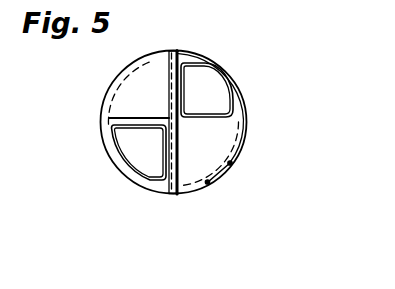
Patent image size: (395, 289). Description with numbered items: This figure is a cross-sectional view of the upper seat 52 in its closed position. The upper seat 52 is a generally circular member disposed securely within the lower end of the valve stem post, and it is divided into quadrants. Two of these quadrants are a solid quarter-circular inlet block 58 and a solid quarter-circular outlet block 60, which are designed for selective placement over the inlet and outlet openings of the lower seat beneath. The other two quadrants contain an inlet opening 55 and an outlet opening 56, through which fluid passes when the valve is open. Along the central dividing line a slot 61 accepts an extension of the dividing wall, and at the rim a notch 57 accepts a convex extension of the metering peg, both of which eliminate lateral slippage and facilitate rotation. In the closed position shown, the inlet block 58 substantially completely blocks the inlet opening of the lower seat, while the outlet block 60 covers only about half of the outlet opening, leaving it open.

The upper seat 52 is at (105, 98).
The inlet opening 55 is at (156, 154).
The outlet opening 56 is at (215, 106).
The notch 57 is at (208, 183).
The inlet block 58 is at (157, 104).
The outlet block 60 is at (215, 156).
The slot 61 is at (172, 192).